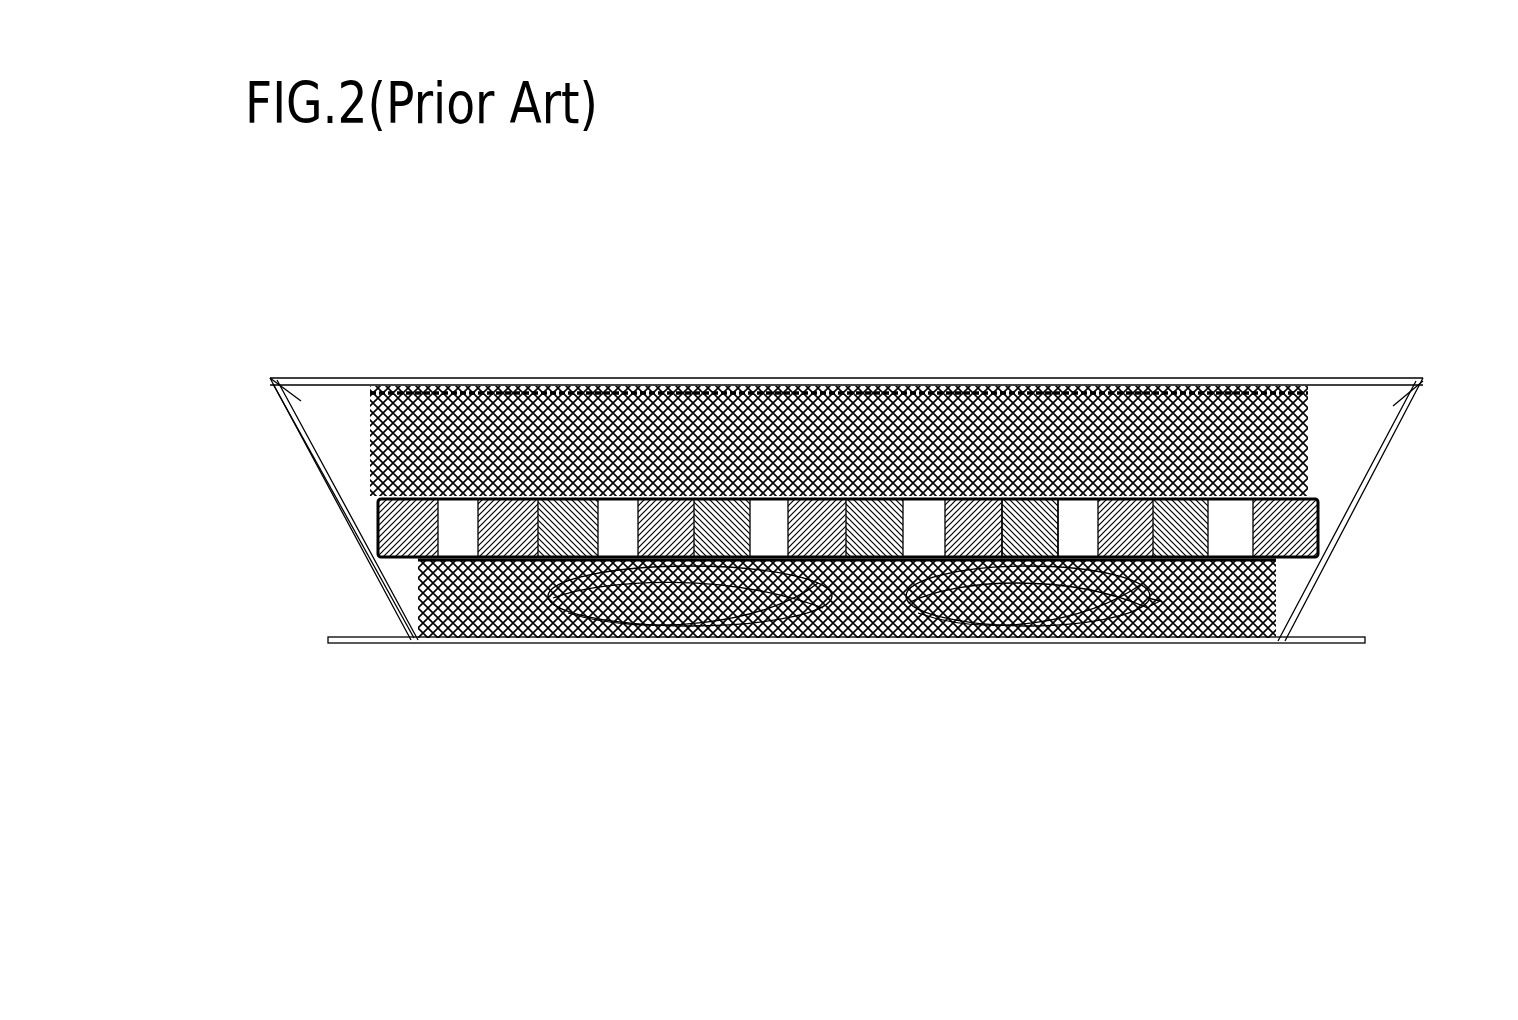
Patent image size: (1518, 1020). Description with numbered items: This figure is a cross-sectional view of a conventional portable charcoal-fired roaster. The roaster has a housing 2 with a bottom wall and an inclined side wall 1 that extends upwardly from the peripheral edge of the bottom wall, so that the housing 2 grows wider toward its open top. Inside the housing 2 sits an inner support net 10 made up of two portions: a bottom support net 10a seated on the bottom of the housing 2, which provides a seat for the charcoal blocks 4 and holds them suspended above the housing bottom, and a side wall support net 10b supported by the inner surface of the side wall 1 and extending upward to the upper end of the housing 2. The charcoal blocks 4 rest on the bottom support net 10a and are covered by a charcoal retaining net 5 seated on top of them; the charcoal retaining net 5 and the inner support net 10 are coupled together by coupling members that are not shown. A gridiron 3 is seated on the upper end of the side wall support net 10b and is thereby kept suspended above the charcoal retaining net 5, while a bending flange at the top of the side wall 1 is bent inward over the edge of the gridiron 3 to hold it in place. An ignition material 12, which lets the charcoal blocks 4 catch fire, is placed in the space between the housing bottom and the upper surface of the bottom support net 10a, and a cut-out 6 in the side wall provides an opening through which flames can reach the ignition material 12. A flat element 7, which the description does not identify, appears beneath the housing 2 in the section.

The side wall 1 is at (285, 420).
The housing 2 is at (295, 467).
The gridiron 3 is at (998, 390).
The charcoal blocks 4 is at (1027, 553).
The charcoal retaining net 5 is at (1122, 493).
The cut-out 6 is at (383, 590).
The base plate 7 is at (350, 632).
The inner support net 10 is at (543, 549).
The bottom support net 10a is at (1262, 588).
The side wall support net 10b is at (1258, 455).
The ignition material 12 is at (817, 637).